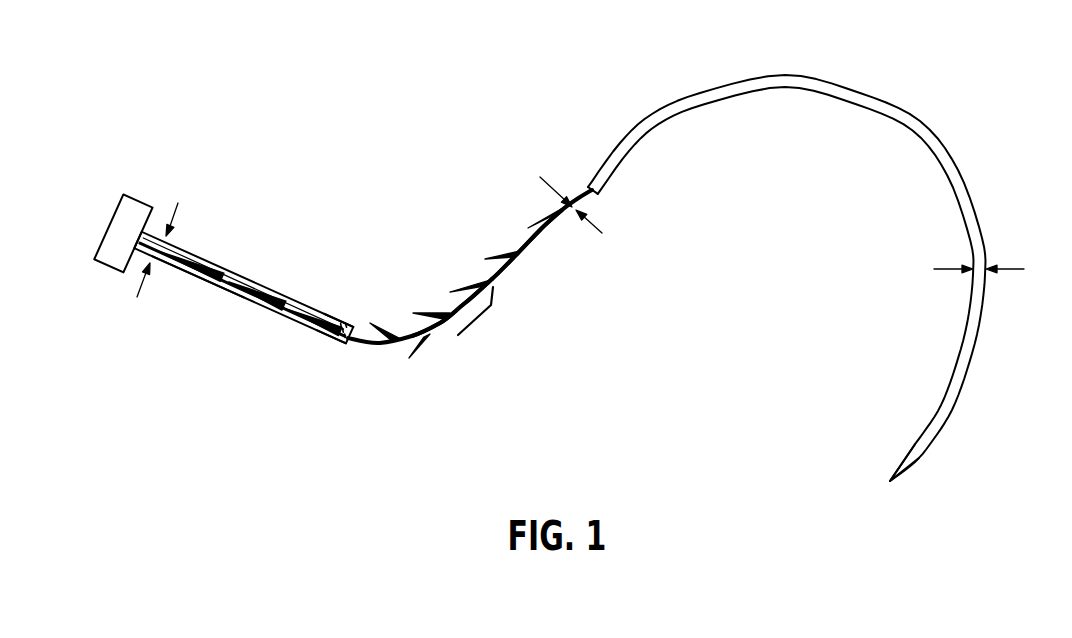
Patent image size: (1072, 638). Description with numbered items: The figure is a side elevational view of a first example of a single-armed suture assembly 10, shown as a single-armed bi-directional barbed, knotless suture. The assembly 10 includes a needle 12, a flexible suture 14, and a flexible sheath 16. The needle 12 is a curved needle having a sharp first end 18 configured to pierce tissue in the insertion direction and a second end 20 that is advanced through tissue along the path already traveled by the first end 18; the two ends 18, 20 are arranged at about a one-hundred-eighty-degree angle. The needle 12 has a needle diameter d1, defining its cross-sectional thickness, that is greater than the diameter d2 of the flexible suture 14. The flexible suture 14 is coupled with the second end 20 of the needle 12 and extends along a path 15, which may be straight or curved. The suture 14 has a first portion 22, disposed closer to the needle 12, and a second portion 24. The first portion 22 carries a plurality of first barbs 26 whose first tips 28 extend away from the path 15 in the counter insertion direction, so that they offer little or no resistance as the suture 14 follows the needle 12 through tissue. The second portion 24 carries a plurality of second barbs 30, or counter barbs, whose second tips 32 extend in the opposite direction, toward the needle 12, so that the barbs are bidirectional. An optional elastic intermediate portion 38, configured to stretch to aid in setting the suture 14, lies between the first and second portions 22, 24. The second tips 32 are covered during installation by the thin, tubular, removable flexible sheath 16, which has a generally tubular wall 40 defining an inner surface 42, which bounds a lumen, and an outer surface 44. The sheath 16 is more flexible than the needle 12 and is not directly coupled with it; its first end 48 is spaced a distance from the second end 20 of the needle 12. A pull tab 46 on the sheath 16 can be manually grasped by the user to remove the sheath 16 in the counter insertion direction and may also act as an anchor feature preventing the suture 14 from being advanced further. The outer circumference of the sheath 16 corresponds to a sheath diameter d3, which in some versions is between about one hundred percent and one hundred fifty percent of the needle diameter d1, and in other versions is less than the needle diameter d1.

The single-armed suture assembly 10 is at (263, 81).
The needle 12 is at (921, 113).
The flexible suture 14 is at (373, 258).
The path 15 is at (522, 252).
The flexible sheath 16 is at (215, 210).
The first end 18 is at (890, 481).
The second end 20 is at (583, 189).
The first portion 22 is at (445, 265).
The second portion 24 is at (248, 262).
The first barbs 26 is at (386, 323).
The first tips 28 is at (458, 335).
The second barbs 30 is at (265, 304).
The second tips 32 is at (265, 307).
The elastic intermediate portion 38 is at (343, 342).
The tubular wall 40 is at (190, 280).
The inner surface 42 is at (277, 293).
The sheath distal end upper wall 44 is at (340, 319).
The pull tab 46 is at (110, 222).
The first end 48 is at (352, 345).
The needle diameter d1 is at (996, 265).
The diameter d2 is at (585, 218).
The sheath diameter d3 is at (144, 267).